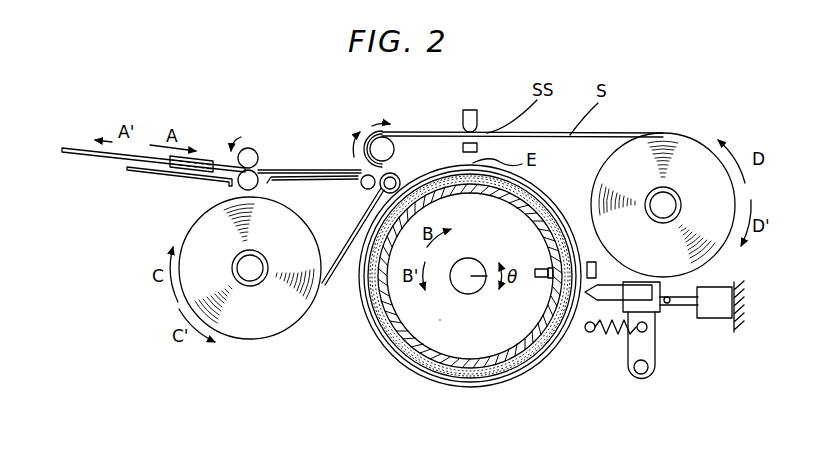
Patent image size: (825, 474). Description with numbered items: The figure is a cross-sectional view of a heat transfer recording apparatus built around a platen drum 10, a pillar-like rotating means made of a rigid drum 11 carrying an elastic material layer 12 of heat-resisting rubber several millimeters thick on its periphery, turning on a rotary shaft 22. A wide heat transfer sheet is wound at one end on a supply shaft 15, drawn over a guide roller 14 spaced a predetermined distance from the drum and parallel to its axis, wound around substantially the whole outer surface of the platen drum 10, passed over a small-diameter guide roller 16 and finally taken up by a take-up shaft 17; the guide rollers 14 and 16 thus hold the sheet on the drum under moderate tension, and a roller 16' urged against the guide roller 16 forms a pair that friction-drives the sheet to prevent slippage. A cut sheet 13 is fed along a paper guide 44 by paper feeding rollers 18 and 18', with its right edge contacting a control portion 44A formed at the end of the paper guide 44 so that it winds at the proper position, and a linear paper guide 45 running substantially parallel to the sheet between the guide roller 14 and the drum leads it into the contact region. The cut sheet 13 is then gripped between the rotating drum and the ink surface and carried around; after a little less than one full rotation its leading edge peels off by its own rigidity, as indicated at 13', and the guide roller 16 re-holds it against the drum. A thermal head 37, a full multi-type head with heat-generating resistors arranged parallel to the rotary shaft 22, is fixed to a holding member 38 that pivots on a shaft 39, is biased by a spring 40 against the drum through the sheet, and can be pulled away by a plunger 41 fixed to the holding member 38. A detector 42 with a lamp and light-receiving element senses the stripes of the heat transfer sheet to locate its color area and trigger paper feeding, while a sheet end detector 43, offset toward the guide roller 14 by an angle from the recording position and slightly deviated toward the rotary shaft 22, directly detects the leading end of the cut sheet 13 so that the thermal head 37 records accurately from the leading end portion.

The platen drum 10 is at (437, 340).
The drum 11 is at (462, 368).
The elastic material layer 12 is at (497, 376).
The cut sheet 13 is at (153, 129).
The peeled leading end of cut sheet 13' is at (431, 204).
The guide roller 14 is at (388, 152).
The supply shaft 15 is at (677, 188).
The guide roller 16 is at (363, 260).
The roller 16' is at (341, 193).
The take-up shaft 17 is at (253, 283).
The paper feeding roller 18 is at (254, 128).
The paper feeding roller 18' is at (271, 152).
The rotary shaft 22 is at (462, 283).
The thermal head 37 is at (597, 300).
The holding member 38 is at (655, 308).
The shaft 39 is at (645, 373).
The spring 40 is at (612, 331).
The plunger 41 is at (720, 307).
The detector 42 is at (474, 150).
The sheet end detector 43 is at (541, 278).
The paper guide 44 is at (160, 172).
The control portion 44A is at (190, 165).
The paper guide 45 is at (300, 177).